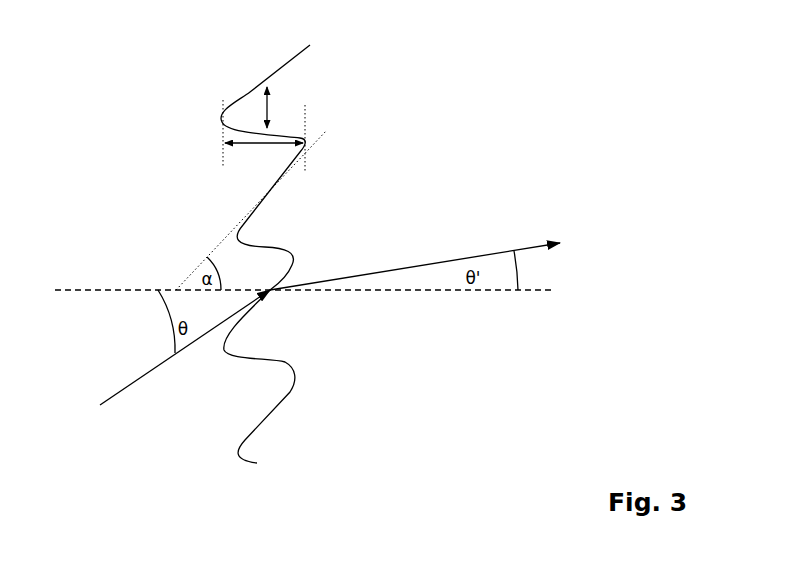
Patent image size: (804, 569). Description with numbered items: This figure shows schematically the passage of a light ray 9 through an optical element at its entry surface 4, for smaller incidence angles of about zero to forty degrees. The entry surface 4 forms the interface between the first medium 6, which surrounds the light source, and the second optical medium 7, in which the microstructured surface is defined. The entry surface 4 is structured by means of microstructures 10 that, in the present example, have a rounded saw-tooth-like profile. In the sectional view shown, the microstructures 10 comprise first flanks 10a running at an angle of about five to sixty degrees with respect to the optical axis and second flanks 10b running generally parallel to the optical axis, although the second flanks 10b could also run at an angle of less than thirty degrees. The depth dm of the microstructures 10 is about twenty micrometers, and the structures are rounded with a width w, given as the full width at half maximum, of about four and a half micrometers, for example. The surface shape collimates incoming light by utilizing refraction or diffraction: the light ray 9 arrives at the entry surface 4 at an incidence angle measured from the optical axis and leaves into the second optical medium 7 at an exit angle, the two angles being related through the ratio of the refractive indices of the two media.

The entry surface 4 is at (331, 56).
The first medium 6 is at (73, 167).
The second optical medium 7 is at (515, 165).
The light ray 9 is at (130, 383).
The microstructures 10 is at (252, 83).
The first flanks 10a is at (243, 205).
The second flanks 10b is at (268, 247).
The width w is at (282, 107).
The depth dm is at (264, 137).